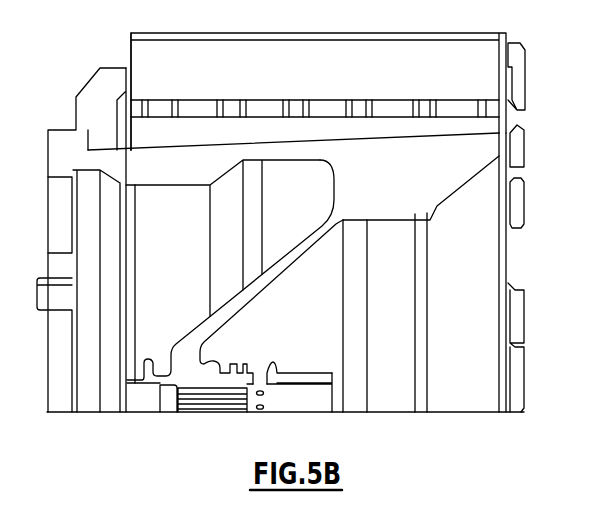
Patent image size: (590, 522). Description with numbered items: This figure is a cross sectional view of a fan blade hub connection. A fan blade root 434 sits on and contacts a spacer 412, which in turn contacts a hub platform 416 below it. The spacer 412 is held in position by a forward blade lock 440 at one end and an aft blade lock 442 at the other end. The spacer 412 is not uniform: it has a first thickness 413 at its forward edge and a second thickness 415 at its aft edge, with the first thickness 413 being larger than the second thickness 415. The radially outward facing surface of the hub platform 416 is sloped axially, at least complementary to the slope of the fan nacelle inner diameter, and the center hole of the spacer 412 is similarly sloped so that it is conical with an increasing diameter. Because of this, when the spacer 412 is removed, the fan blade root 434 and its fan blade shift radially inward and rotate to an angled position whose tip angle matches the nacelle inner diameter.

The spacer 412 is at (230, 130).
The first thickness 413 is at (135, 128).
The second thickness 415 is at (474, 118).
The hub platform 416 is at (407, 192).
The fan blade root 434 is at (295, 65).
The forward blade lock 440 is at (96, 78).
The aft blade lock 442 is at (510, 62).